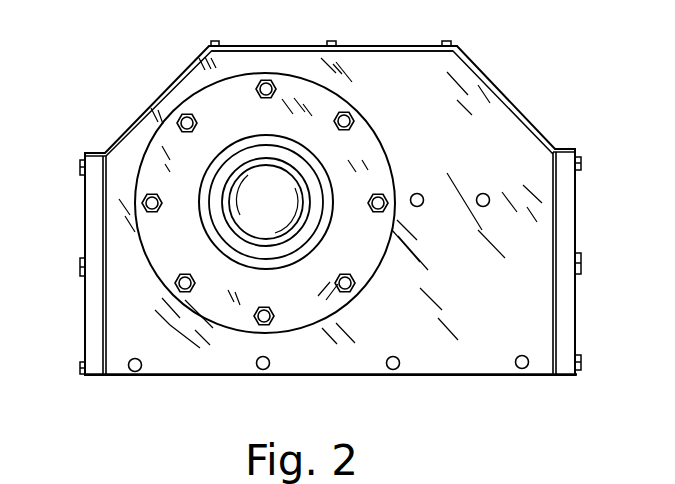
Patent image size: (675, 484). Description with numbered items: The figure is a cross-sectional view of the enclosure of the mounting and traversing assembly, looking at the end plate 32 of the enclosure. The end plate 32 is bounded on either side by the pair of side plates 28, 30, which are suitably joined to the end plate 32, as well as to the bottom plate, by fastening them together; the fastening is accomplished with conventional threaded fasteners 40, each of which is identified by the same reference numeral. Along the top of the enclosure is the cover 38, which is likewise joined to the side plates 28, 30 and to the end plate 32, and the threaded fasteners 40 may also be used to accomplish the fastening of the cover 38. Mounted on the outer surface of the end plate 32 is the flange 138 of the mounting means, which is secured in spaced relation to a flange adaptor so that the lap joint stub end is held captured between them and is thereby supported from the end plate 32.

The side plate 28 is at (85, 236).
The side plate 30 is at (575, 298).
The end plate 32 is at (494, 305).
The cover 38 is at (420, 44).
The threaded fasteners 40 is at (218, 42).
The flange 138 is at (367, 286).